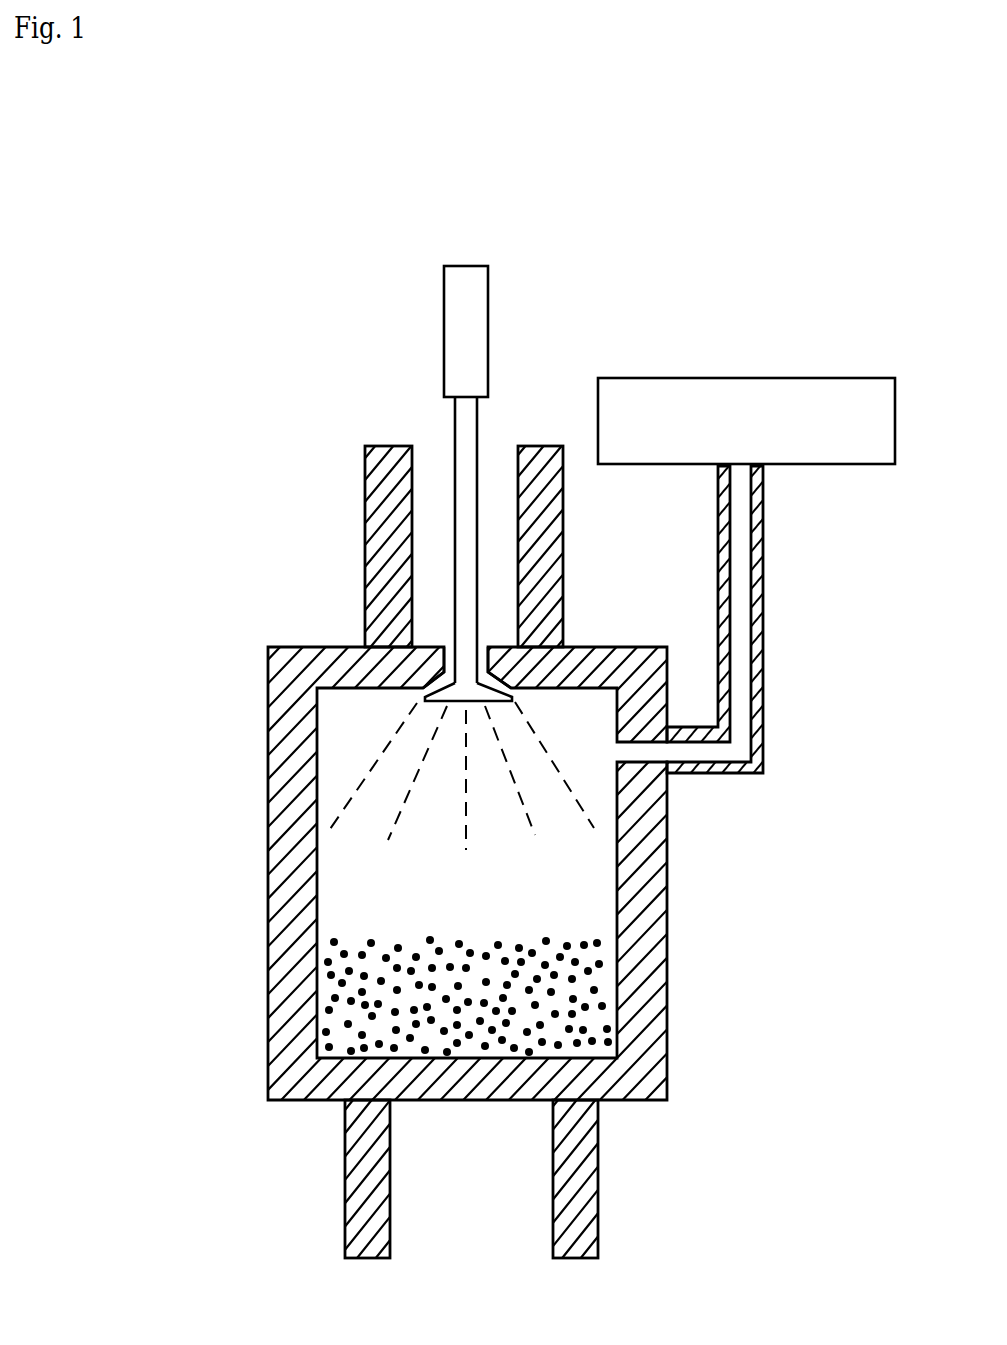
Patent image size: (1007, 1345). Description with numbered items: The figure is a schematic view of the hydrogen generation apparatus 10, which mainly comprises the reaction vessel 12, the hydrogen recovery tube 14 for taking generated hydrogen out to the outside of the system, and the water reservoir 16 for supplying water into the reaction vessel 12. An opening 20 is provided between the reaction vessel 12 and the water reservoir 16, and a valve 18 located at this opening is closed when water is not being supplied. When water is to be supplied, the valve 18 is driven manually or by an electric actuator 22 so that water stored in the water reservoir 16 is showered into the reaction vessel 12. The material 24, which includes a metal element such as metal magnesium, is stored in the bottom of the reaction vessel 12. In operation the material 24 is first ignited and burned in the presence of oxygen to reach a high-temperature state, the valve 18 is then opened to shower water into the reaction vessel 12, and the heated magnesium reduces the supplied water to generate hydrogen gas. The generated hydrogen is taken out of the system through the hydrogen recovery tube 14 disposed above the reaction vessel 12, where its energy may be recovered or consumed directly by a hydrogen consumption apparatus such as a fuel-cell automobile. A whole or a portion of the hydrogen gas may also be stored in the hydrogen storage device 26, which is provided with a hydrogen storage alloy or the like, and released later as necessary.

The hydrogen generation apparatus 10 is at (277, 572).
The reaction vessel 12 is at (637, 943).
The hydrogen recovery tube 14 is at (758, 615).
The water reservoir 16 is at (533, 528).
The valve 18 is at (448, 680).
The opening 20 is at (490, 657).
The electric actuator 22 is at (477, 312).
The material 24 is at (550, 1025).
The hydrogen storage device 26 is at (737, 392).